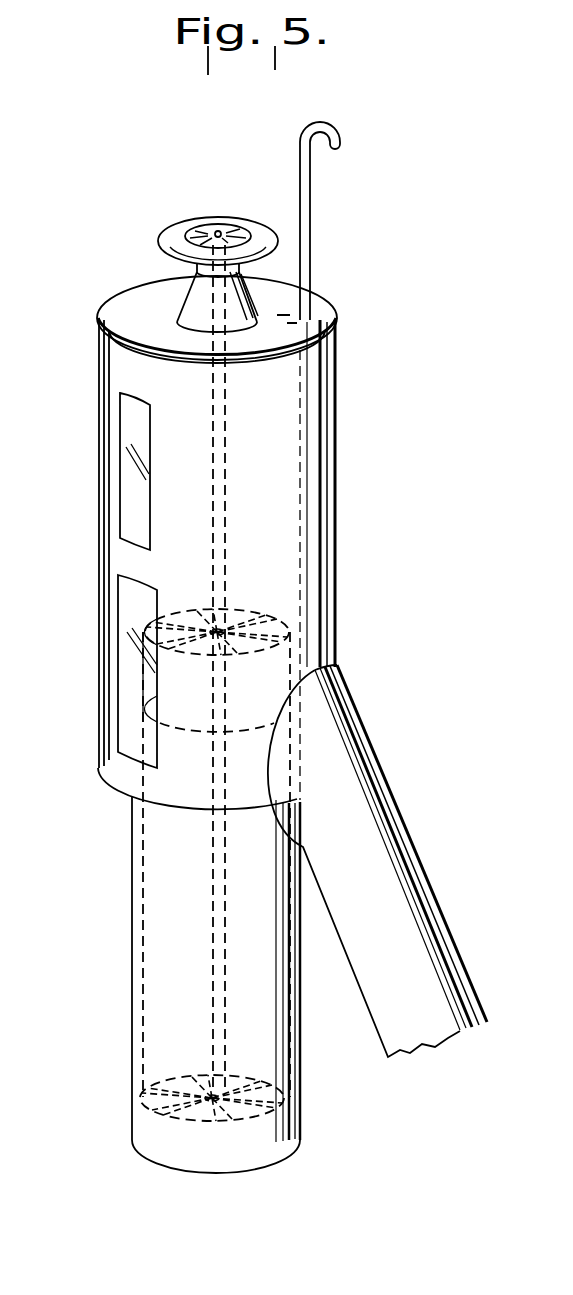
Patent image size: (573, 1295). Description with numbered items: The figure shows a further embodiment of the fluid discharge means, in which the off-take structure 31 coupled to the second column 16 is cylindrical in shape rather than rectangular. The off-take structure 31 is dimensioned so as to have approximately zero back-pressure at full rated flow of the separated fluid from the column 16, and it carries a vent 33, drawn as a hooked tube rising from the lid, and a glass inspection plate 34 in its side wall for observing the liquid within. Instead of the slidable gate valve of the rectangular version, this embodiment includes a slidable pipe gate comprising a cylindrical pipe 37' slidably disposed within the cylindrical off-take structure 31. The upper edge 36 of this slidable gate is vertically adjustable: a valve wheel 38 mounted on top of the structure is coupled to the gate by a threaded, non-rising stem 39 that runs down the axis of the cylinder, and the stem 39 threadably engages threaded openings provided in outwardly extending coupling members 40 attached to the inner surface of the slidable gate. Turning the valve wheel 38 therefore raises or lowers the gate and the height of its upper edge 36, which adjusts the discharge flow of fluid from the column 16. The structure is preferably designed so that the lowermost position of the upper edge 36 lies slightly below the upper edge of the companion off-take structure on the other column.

The off-take structure 31 is at (347, 466).
The vent 33 is at (337, 123).
The valve wheel 38 is at (180, 220).
The threaded, non-rising stem 39 is at (225, 485).
The glass inspection plate 34 is at (130, 593).
The upper edge 36 is at (286, 620).
The cylindrical pipe 37' is at (107, 864).
The coupling members 40 is at (247, 610).
The second column 16 is at (130, 838).